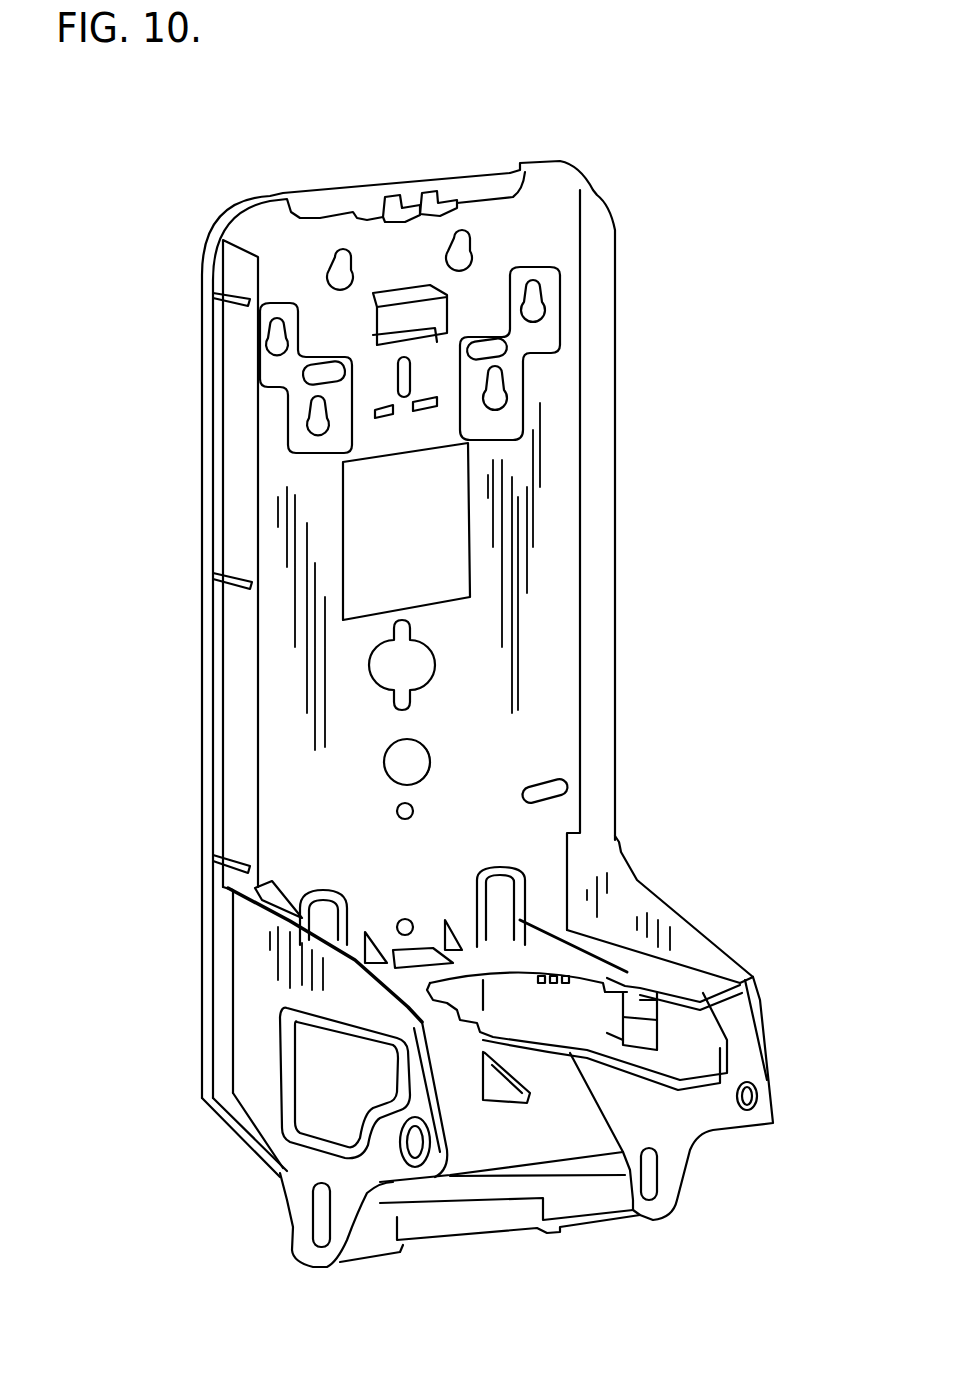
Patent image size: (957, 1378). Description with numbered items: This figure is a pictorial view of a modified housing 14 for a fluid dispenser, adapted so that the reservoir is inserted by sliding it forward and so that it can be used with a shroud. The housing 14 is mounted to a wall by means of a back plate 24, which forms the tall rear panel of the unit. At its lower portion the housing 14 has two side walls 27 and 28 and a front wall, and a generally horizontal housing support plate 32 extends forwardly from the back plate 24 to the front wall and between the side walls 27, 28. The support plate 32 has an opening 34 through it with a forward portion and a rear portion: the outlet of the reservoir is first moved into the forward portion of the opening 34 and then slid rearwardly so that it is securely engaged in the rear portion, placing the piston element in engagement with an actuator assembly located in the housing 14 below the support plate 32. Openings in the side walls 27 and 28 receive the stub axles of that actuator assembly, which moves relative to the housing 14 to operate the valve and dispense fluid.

The housing 14 is at (180, 703).
The back plate 24 is at (207, 417).
The side wall 27 is at (305, 1168).
The side wall 28 is at (690, 1127).
The housing support plate 32 is at (703, 987).
The opening 34 is at (567, 1007).